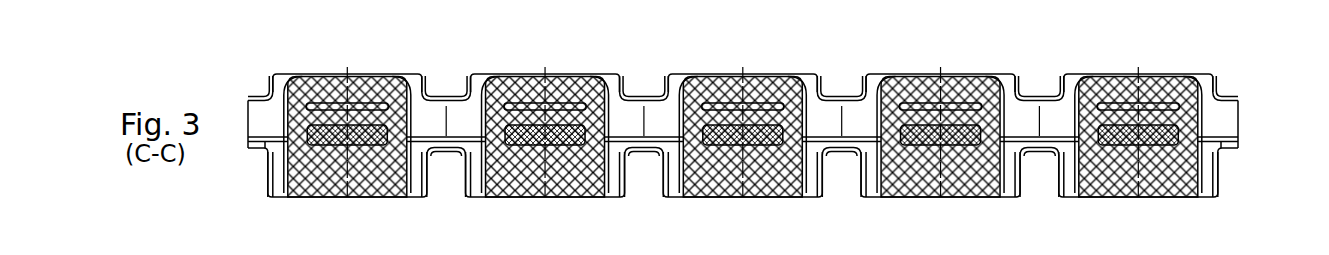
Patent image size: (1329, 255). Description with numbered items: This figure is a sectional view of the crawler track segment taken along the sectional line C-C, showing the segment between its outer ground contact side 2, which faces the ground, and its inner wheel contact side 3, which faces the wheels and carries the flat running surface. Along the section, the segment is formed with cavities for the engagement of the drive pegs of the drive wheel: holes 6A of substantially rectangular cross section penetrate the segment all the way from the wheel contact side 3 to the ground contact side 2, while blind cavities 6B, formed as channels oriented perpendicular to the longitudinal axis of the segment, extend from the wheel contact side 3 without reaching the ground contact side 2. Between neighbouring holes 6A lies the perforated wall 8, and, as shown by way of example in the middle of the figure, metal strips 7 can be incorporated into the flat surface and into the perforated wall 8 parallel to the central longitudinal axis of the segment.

The outer ground contact side 2 is at (775, 135).
The inner wheel contact side 3 is at (1233, 70).
The holes 6A is at (653, 130).
The blind cavities 6B is at (447, 86).
The metal strips 7 is at (835, 128).
The perforated wall 8 is at (1050, 128).